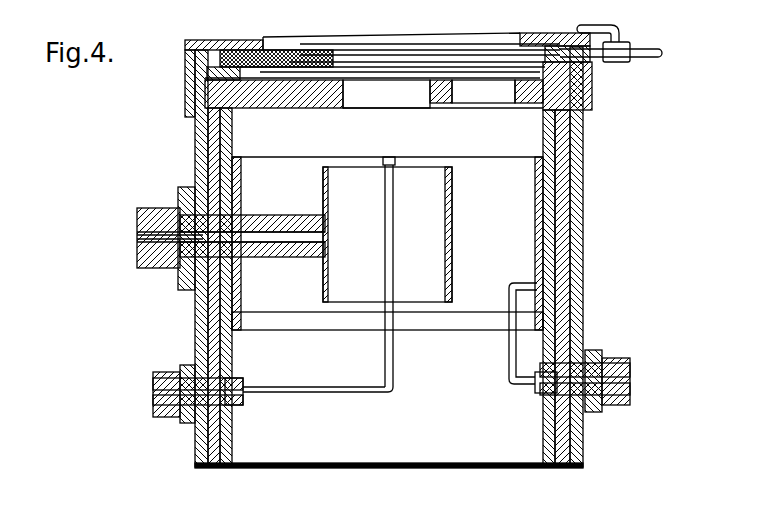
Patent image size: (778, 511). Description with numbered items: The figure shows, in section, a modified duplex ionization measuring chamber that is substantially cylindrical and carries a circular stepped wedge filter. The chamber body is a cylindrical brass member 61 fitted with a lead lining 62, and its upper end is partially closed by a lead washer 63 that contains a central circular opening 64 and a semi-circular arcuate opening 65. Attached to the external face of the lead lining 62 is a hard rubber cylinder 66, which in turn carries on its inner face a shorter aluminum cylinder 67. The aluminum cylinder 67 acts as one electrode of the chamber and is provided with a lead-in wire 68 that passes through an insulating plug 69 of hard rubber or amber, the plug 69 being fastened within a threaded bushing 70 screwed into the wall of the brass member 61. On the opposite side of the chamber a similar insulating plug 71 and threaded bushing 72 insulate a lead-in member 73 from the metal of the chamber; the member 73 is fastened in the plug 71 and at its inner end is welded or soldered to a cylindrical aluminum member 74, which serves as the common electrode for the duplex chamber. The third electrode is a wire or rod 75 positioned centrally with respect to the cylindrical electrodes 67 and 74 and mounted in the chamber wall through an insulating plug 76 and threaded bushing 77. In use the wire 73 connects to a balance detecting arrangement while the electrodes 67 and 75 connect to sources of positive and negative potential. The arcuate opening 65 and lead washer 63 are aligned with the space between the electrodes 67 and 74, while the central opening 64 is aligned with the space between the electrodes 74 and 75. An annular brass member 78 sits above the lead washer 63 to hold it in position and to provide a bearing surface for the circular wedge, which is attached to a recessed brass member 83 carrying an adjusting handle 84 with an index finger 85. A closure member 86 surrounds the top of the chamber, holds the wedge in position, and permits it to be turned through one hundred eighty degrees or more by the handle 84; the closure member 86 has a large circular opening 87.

The cylindrical brass member 61 is at (580, 250).
The lead lining 62 is at (580, 280).
The lead washer 63 is at (592, 95).
The circular opening 64 is at (386, 105).
The semi-circular arcuate opening 65 is at (487, 97).
The hard rubber cylinder 66 is at (580, 165).
The aluminum cylinder 67 is at (578, 210).
The lead-in wire 68 is at (508, 348).
The insulating plug 69 is at (630, 373).
The threaded bushing 70 is at (614, 359).
The insulating plug 71 is at (293, 216).
The threaded bushing 72 is at (152, 208).
The lead-in member 73 is at (303, 243).
The cylindrical aluminum member 74 is at (453, 226).
The wire or rod electrode 75 is at (394, 365).
The insulating plug 76 is at (236, 382).
The threaded bushing 77 is at (167, 372).
The annular metal member 78 is at (591, 70).
The recessed brass member 83 is at (213, 44).
The adjusting handle 84 is at (657, 50).
The index finger 85 is at (621, 27).
The closure member 86 is at (186, 80).
The large circular opening 87 is at (490, 38).